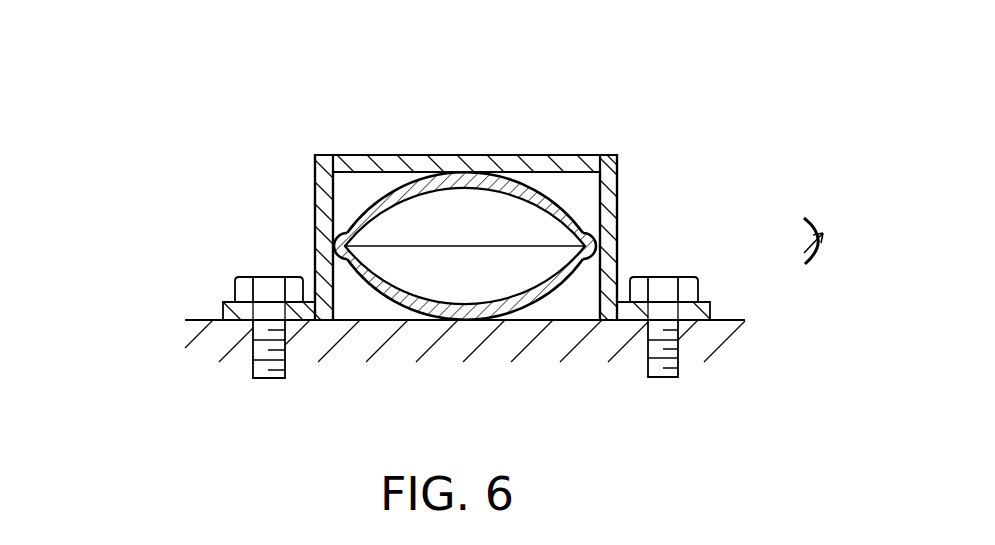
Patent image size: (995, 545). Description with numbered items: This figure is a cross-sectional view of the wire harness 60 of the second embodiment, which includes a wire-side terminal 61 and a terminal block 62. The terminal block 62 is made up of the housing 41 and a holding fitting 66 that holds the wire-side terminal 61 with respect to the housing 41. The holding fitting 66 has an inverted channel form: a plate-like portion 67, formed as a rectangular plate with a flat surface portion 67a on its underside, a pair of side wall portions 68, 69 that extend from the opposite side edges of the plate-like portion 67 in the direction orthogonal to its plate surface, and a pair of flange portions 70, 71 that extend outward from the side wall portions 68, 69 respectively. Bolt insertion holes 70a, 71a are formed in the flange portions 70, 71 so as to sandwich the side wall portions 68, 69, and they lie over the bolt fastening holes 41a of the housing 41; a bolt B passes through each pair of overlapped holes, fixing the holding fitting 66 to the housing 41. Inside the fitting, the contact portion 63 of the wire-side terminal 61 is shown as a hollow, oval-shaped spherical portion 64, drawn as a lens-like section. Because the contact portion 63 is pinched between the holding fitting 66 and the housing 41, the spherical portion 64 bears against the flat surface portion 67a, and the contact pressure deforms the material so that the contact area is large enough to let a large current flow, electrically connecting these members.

The wire harness 60 is at (757, 80).
The wire-side terminal 61 is at (345, 236).
The terminal block 62 is at (203, 327).
The contact portion 63 is at (372, 205).
The spherical portion 64 is at (518, 177).
The holding fitting 66 is at (595, 155).
The plate-like portion 67 is at (548, 157).
The flat surface portion 67a is at (399, 174).
The side wall portion 68 is at (322, 180).
The side wall portion 69 is at (607, 198).
The flange portion 70 is at (229, 301).
The bolt insertion hole 70a is at (258, 323).
The flange portion 71 is at (700, 301).
The bolt insertion hole 71a is at (647, 320).
The housing 41 is at (716, 346).
The bolt fastening hole 41a is at (280, 340).
The bolt B is at (268, 375).